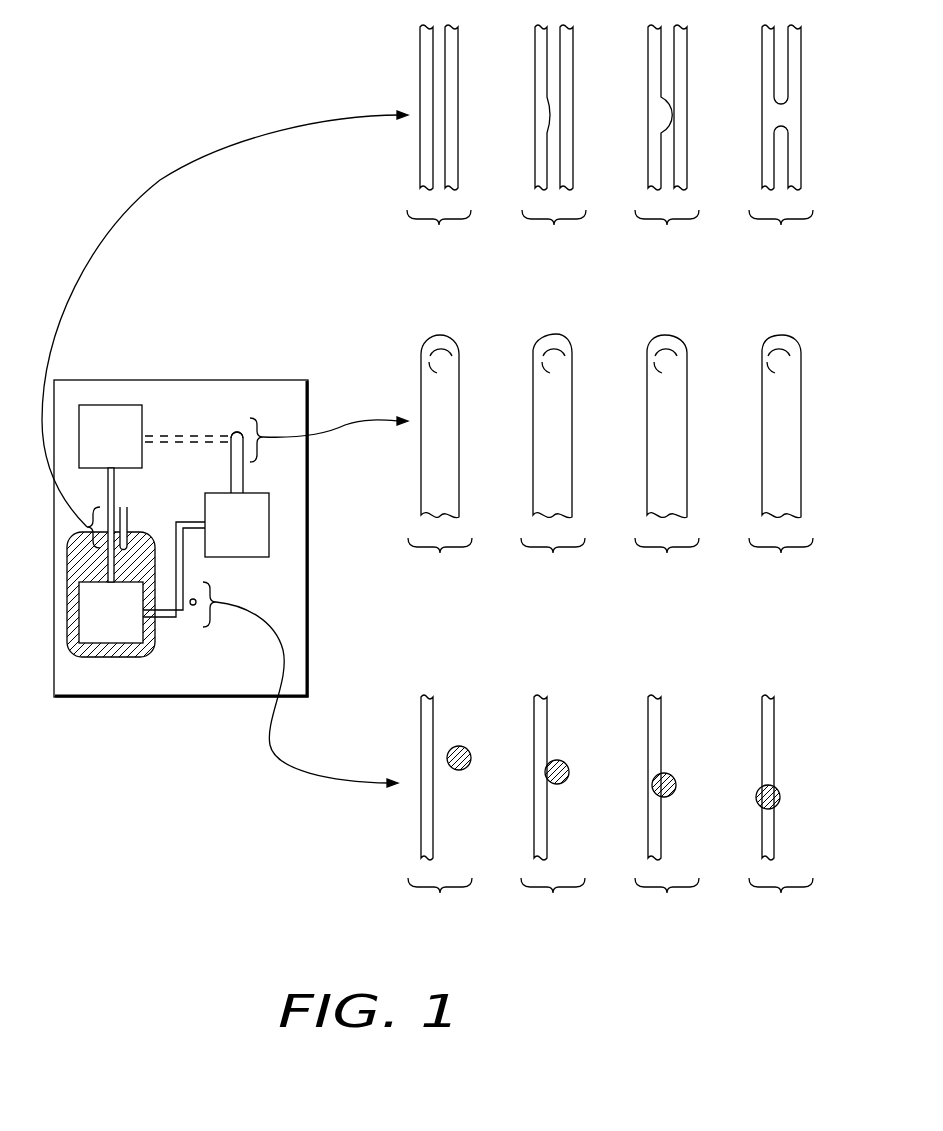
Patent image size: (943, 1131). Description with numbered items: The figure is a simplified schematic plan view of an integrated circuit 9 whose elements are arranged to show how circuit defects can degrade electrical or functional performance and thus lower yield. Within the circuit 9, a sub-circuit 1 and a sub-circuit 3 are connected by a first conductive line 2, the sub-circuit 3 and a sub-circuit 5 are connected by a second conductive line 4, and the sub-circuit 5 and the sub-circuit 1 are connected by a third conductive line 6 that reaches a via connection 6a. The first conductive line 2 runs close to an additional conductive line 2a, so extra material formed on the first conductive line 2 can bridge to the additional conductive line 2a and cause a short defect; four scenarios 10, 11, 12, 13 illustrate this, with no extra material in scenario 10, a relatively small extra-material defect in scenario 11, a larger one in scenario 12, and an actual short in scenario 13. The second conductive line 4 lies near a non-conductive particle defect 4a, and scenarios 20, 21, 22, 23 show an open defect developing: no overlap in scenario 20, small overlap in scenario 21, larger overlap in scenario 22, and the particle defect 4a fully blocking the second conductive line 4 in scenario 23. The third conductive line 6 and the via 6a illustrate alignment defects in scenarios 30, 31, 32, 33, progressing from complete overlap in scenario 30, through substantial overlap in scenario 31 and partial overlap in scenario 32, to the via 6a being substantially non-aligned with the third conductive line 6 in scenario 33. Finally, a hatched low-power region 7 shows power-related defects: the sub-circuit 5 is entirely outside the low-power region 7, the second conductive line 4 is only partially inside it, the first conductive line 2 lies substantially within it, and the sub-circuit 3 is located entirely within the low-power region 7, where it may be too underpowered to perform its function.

The sub-circuit 1 is at (120, 450).
The first conductive line 2 is at (108, 493).
The additional conductive line 2a is at (128, 513).
The sub-circuit 3 is at (120, 626).
The second conductive line 4 is at (191, 522).
The particle defect 4a is at (193, 606).
The sub-circuit 5 is at (246, 538).
The third conductive line 6 is at (231, 467).
The via connection 6a is at (233, 430).
The low-power region 7 is at (106, 658).
The integrated circuit 9 is at (248, 379).
The first short-defect scenario 10 is at (420, 50).
The second short-defect scenario 11 is at (535, 161).
The third short-defect scenario 12 is at (648, 50).
The fourth short-defect scenario 13 is at (762, 161).
The first open-defect scenario 20 is at (421, 716).
The second open-defect scenario 21 is at (534, 716).
The third open-defect scenario 22 is at (648, 716).
The fourth open-defect scenario 23 is at (762, 716).
The first alignment-defect scenario 30 is at (448, 470).
The second alignment-defect scenario 31 is at (561, 470).
The third alignment-defect scenario 32 is at (675, 470).
The fourth alignment-defect scenario 33 is at (789, 470).